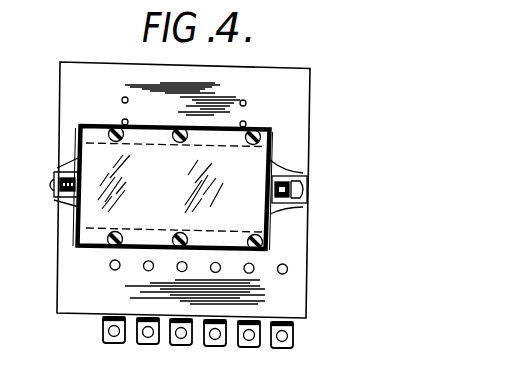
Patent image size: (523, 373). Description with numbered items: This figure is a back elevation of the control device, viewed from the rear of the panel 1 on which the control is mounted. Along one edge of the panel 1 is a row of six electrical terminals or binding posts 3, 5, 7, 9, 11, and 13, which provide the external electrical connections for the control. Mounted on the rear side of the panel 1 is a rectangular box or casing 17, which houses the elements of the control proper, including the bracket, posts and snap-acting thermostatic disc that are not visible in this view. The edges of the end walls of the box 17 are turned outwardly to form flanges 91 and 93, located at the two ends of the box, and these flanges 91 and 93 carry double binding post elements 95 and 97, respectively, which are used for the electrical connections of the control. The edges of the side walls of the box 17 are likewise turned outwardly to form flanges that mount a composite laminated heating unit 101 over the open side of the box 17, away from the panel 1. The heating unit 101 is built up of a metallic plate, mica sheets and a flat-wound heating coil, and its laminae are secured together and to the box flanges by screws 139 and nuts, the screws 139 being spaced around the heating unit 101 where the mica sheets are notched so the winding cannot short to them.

The panel 1 is at (309, 127).
The electrical terminal or binding post 3 is at (280, 348).
The electrical terminal or binding post 5 is at (246, 347).
The electrical terminal or binding post 7 is at (213, 346).
The electrical terminal or binding post 9 is at (181, 345).
The electrical terminal or binding post 11 is at (147, 344).
The electrical terminal or binding post 13 is at (118, 343).
The rectangular box or casing 17 is at (271, 128).
The flange 91 is at (304, 172).
The flange 93 is at (62, 166).
The double binding post element 95 is at (305, 207).
The double binding post element 97 is at (53, 191).
The composite laminated heating unit 101 is at (147, 122).
The screws 139 is at (121, 139).